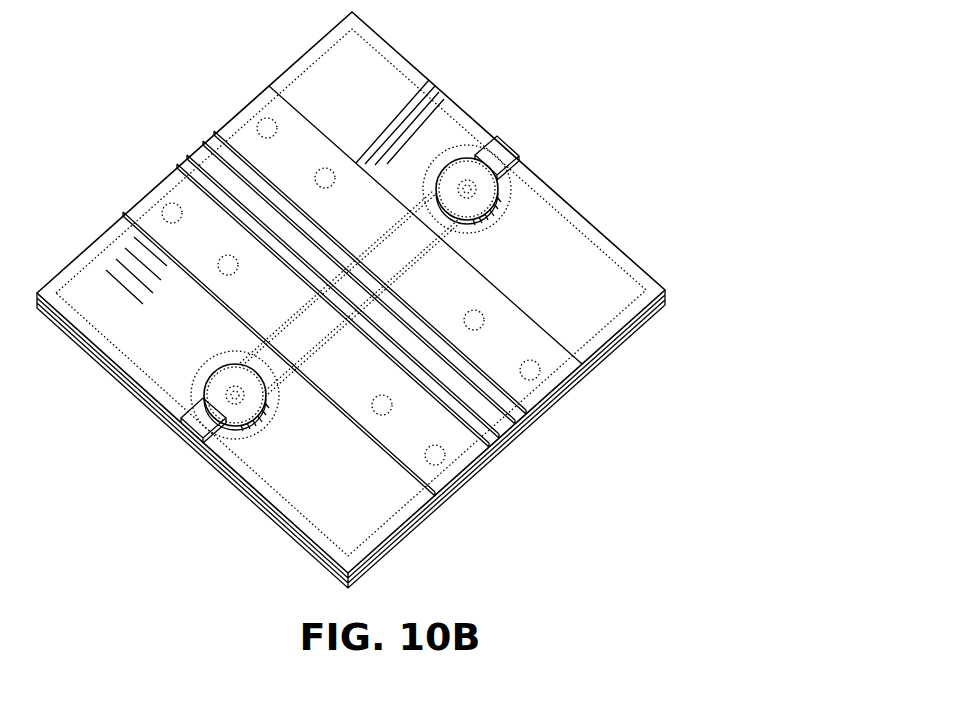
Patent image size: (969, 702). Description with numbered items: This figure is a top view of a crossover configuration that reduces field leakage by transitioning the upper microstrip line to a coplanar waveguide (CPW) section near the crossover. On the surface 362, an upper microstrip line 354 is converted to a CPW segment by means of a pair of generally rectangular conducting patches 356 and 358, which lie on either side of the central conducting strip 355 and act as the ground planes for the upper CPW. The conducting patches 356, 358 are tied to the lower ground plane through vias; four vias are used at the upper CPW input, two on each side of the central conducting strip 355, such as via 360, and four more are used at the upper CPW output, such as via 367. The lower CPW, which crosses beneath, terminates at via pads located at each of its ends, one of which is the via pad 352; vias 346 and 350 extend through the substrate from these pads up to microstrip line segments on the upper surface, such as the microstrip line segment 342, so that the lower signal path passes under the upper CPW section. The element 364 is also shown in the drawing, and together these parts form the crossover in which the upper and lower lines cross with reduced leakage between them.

The microstrip line segment 342 is at (196, 415).
The via 346 is at (235, 399).
The via 350 is at (472, 189).
The via pad 352 is at (487, 149).
The upper microstrip line 354 is at (191, 148).
The central conducting strip 355 is at (221, 165).
The conducting patch 356 is at (133, 207).
The conducting patch 358 is at (232, 114).
The via 360 is at (323, 168).
The surface 362 is at (592, 250).
The base plate 364 is at (648, 317).
The via 367 is at (543, 365).